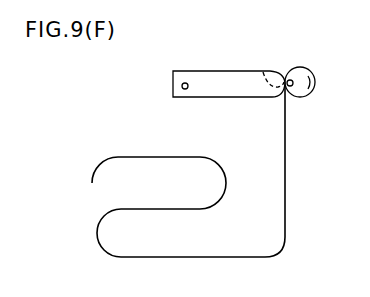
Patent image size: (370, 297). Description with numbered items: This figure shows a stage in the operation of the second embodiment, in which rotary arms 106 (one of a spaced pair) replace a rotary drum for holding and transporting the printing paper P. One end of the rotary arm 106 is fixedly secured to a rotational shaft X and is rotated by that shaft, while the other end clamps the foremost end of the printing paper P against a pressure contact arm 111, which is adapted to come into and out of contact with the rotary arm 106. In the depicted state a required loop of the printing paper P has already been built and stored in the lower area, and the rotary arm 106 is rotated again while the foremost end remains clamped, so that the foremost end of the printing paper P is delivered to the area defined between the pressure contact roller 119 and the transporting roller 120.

The rotary arm 106 is at (228, 71).
The pressure contact roller 119 is at (263, 70).
The transporting roller 120 is at (298, 67).
The pressure contact arm 111 is at (291, 87).
The printing paper P is at (106, 251).
The rotational shaft X is at (173, 88).